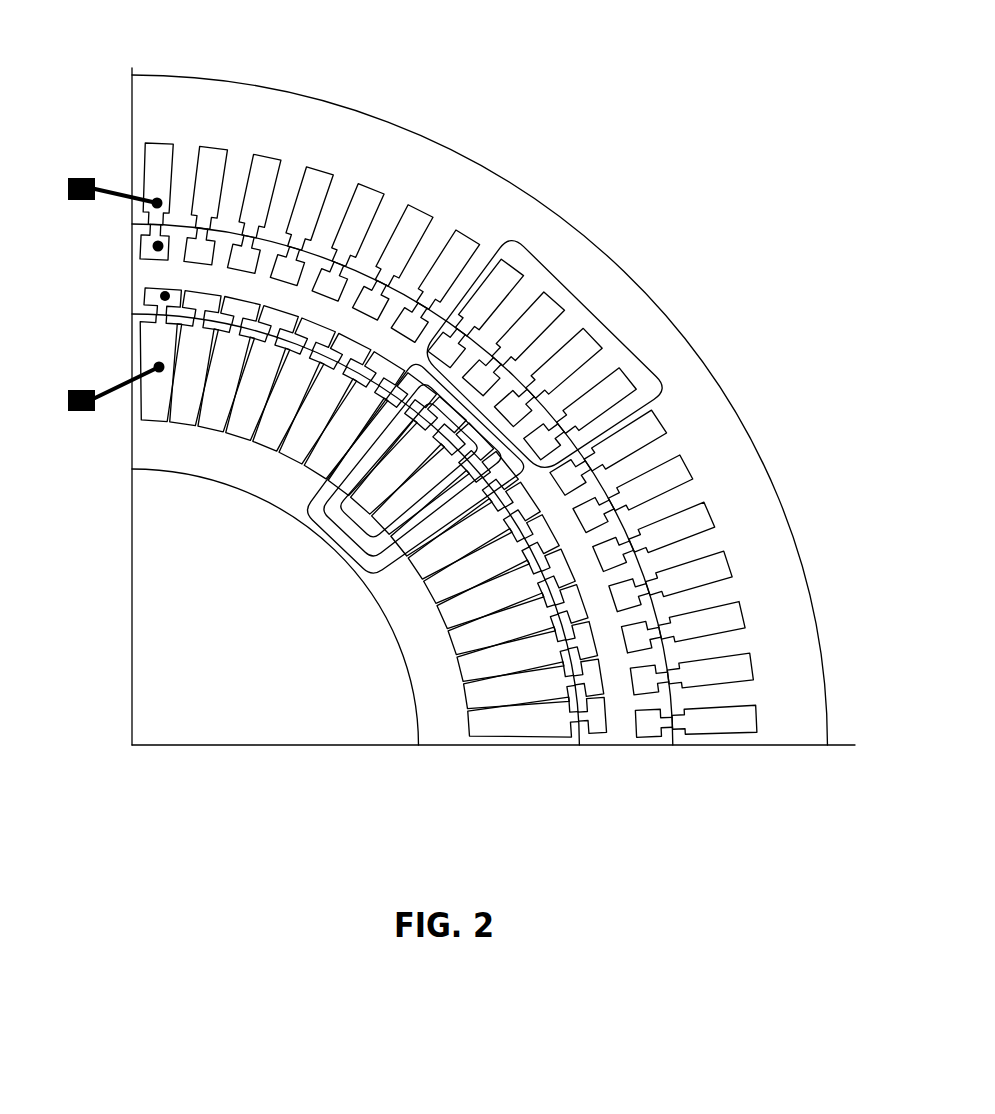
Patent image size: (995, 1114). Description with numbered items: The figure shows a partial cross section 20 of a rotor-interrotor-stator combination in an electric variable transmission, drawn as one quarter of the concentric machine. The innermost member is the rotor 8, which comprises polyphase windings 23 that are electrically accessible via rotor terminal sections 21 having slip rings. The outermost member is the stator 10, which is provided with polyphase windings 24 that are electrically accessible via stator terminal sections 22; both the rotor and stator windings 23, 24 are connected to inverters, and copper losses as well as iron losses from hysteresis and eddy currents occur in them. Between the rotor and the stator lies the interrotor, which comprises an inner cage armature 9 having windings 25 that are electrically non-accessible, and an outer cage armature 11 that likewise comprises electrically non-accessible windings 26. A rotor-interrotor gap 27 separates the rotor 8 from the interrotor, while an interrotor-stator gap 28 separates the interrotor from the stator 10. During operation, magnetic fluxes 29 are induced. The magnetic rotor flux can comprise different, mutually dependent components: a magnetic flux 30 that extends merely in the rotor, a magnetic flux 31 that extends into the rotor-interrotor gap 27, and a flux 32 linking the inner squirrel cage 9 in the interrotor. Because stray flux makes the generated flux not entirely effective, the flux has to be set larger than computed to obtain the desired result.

The partial cross section 20 is at (586, 84).
The stator 10 is at (330, 128).
The rotor 8 is at (150, 456).
The inner cage armature 9 is at (140, 297).
The outer cage armature 11 is at (143, 242).
The rotor terminal section 21 is at (80, 411).
The stator terminal section 22 is at (78, 178).
The rotor polyphase windings 23 is at (160, 372).
The stator polyphase windings 24 is at (157, 200).
The inner cage armature windings 25 is at (140, 294).
The outer cage armature windings 26 is at (143, 247).
The rotor-interrotor gap 27 is at (578, 758).
The interrotor-stator gap 28 is at (673, 758).
The magnetic fluxes 29 is at (577, 285).
The magnetic flux extending merely in the rotor 30 is at (437, 565).
The magnetic flux extending into the rotor-interrotor gap 31 is at (442, 610).
The flux linking the inner squirrel cage 32 is at (457, 655).